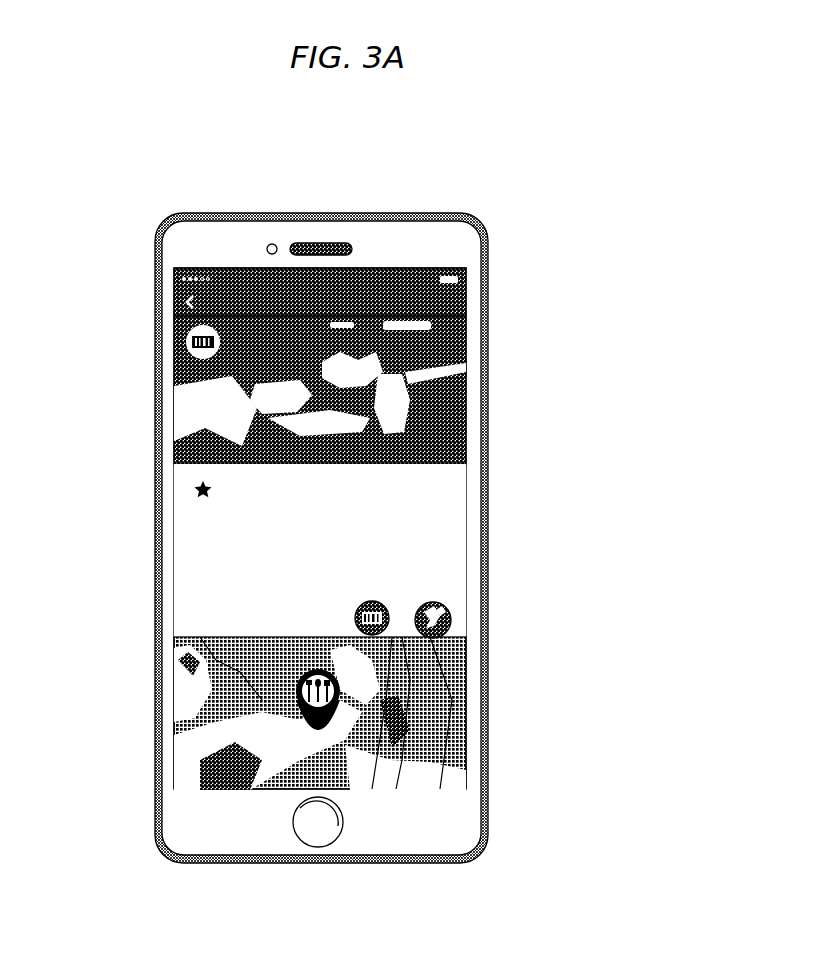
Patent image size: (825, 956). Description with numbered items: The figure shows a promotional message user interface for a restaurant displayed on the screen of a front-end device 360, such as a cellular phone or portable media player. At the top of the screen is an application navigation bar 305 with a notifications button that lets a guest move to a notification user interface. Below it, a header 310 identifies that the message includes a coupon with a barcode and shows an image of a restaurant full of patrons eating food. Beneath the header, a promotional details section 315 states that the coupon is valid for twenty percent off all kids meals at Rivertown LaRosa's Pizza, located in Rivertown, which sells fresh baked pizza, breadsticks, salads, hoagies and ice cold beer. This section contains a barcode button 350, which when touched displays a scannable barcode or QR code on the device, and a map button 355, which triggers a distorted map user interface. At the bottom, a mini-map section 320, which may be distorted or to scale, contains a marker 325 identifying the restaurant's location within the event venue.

The front-end device 360 is at (393, 246).
The application navigation bar 305 is at (512, 282).
The header 310 is at (512, 328).
The promotional details section 315 is at (512, 476).
The mini-map section 320 is at (512, 648).
The barcode button 350 is at (314, 618).
The map button 355 is at (432, 597).
The marker 325 is at (298, 699).